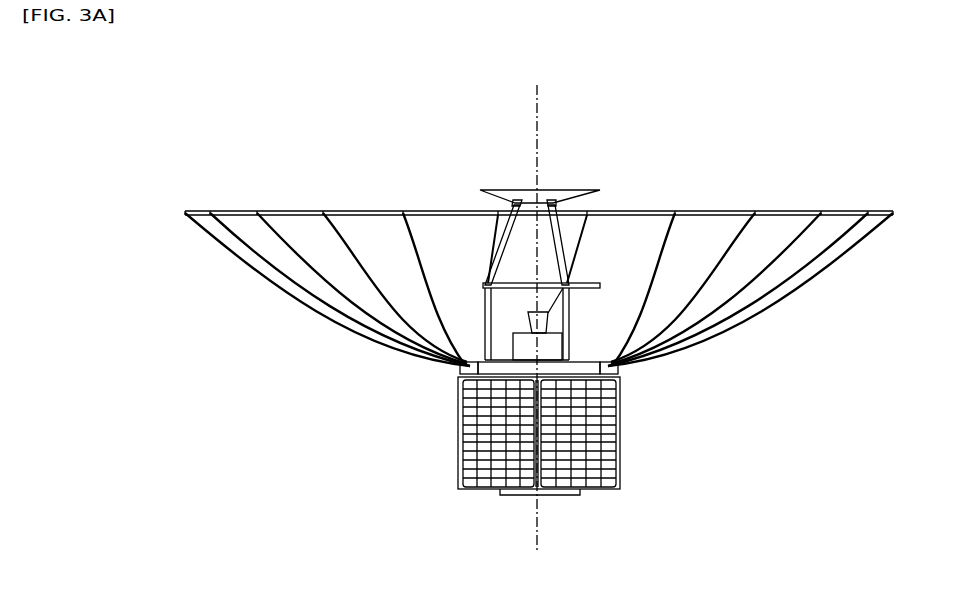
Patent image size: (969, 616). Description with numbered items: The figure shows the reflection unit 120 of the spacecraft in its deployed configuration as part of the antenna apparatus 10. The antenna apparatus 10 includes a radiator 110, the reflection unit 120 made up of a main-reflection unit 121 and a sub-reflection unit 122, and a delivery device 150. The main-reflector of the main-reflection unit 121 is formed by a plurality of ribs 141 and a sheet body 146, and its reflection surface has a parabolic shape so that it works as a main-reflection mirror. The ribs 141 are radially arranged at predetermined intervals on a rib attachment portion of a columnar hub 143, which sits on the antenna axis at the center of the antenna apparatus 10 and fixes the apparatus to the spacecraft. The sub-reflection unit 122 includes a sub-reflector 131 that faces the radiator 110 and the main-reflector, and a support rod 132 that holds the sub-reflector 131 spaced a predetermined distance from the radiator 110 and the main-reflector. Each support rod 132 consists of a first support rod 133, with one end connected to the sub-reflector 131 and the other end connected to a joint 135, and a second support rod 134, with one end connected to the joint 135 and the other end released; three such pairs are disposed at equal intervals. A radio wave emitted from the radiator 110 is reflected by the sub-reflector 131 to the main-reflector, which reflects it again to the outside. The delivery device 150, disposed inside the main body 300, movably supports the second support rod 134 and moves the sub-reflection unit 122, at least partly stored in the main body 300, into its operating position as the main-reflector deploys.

The antenna apparatus 10 is at (215, 364).
The radiator 110 is at (546, 318).
The reflection unit 120 is at (623, 107).
The main-reflection unit 121 is at (646, 211).
The sub-reflection unit 122 is at (550, 190).
The sub-reflector 131 is at (495, 189).
The support rod 132 is at (427, 369).
The first support rod 133 is at (490, 273).
The second support rod 134 is at (488, 303).
The joint 135 is at (570, 285).
The ribs 141 is at (343, 235).
The hub 143 is at (607, 370).
The sheet body 146 is at (307, 235).
The delivery device 150 is at (622, 402).
The main body 300 is at (622, 437).